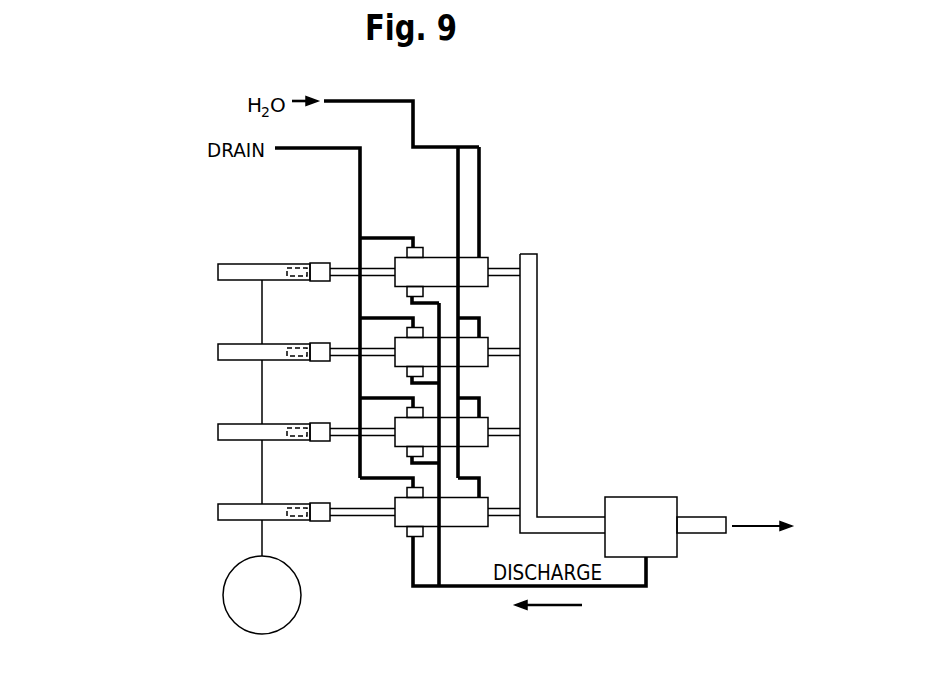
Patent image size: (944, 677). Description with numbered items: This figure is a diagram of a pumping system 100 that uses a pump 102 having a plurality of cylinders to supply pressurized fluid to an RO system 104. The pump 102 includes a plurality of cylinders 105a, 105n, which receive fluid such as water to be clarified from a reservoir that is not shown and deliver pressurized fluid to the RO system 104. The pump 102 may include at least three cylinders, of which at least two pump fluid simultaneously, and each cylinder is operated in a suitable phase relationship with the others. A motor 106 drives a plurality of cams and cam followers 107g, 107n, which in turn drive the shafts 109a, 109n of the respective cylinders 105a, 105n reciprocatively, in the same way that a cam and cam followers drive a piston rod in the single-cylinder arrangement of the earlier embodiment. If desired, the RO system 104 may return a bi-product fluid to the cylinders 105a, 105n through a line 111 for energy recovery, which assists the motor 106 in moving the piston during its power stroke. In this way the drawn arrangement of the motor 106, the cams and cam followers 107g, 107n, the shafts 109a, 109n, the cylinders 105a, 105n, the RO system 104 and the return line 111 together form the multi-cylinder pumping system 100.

The pumping system 100 is at (590, 243).
The pump 102 is at (162, 320).
The RO system 104 is at (633, 497).
The cylinder 105a is at (443, 257).
The cylinder 105n is at (402, 526).
The motor 106 is at (230, 586).
The cam and cam follower 107g is at (231, 265).
The cam and cam follower 107n is at (227, 507).
The shaft 109a is at (343, 266).
The shaft 109n is at (338, 510).
The line 111 is at (633, 590).